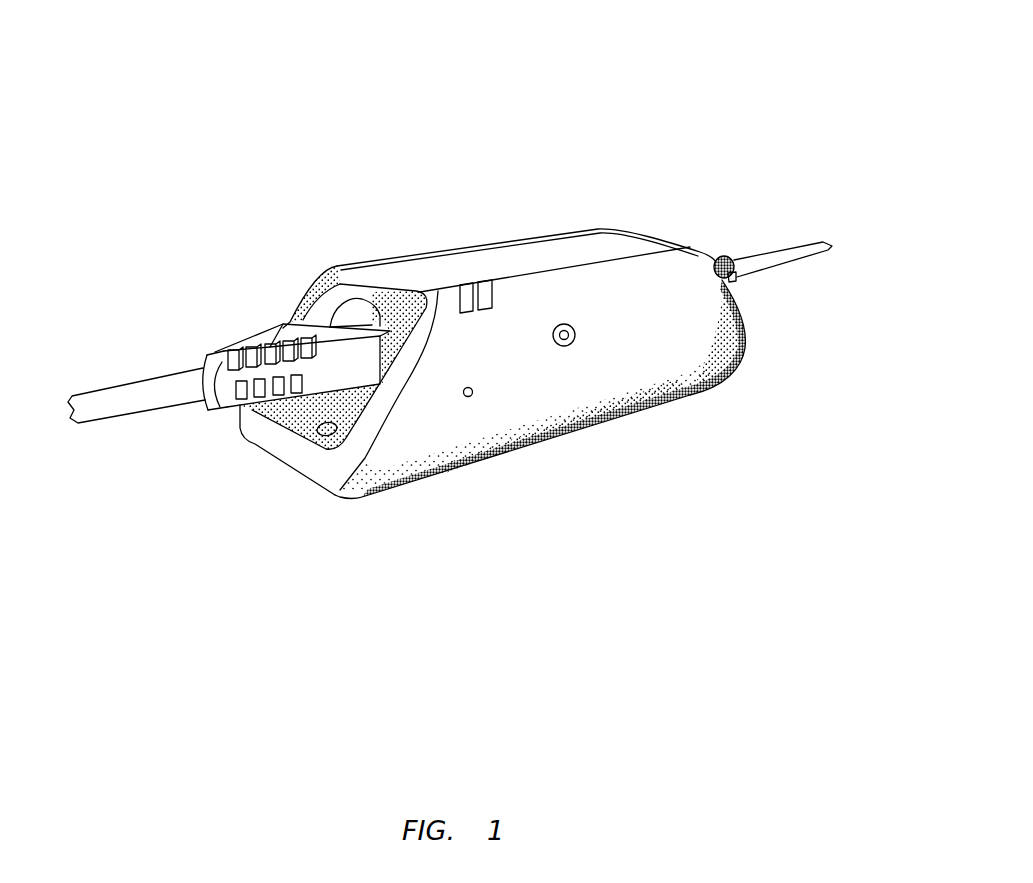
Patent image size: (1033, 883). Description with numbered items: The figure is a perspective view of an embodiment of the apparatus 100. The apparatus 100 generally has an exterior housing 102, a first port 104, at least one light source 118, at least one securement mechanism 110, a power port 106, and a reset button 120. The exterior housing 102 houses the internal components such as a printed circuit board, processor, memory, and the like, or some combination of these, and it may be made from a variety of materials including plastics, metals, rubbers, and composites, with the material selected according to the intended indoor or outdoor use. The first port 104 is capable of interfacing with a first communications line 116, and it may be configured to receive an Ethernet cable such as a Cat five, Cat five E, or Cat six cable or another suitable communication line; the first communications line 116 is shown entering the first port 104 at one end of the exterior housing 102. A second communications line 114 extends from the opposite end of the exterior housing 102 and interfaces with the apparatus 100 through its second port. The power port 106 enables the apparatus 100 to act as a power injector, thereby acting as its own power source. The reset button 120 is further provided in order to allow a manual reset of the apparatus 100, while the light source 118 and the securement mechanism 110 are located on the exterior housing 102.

The apparatus 100 is at (681, 43).
The exterior housing 102 is at (574, 187).
The first port 104 is at (378, 335).
The power port 106 is at (566, 347).
The securement mechanism 110 is at (320, 433).
The second communications line 114 is at (725, 260).
The first communications line 116 is at (241, 338).
The light source 118 is at (471, 284).
The reset button 120 is at (471, 398).